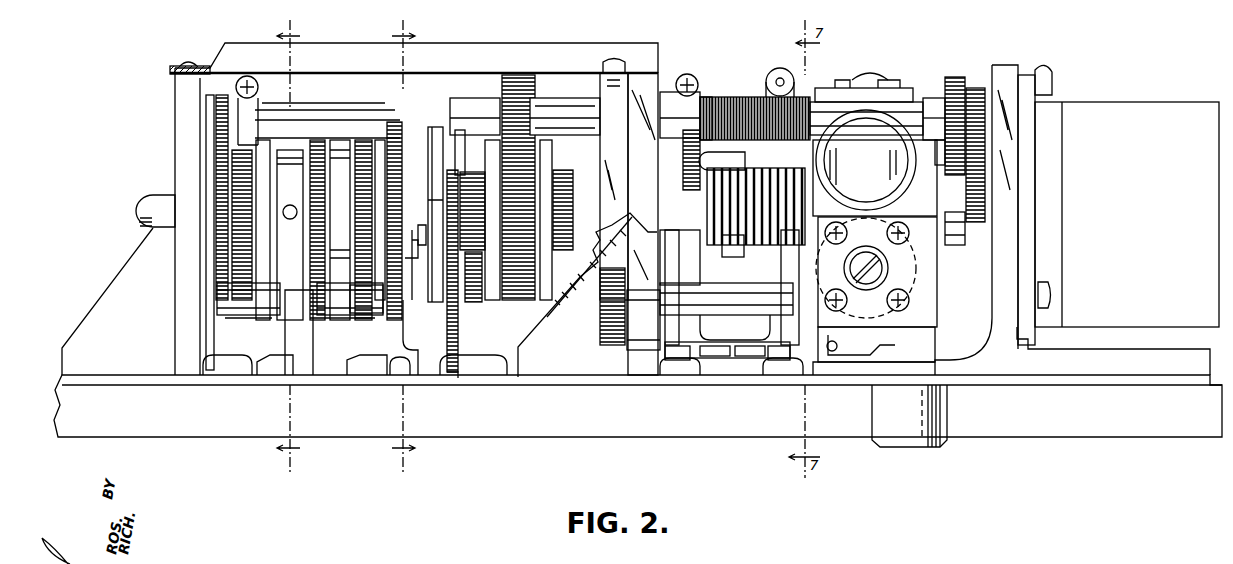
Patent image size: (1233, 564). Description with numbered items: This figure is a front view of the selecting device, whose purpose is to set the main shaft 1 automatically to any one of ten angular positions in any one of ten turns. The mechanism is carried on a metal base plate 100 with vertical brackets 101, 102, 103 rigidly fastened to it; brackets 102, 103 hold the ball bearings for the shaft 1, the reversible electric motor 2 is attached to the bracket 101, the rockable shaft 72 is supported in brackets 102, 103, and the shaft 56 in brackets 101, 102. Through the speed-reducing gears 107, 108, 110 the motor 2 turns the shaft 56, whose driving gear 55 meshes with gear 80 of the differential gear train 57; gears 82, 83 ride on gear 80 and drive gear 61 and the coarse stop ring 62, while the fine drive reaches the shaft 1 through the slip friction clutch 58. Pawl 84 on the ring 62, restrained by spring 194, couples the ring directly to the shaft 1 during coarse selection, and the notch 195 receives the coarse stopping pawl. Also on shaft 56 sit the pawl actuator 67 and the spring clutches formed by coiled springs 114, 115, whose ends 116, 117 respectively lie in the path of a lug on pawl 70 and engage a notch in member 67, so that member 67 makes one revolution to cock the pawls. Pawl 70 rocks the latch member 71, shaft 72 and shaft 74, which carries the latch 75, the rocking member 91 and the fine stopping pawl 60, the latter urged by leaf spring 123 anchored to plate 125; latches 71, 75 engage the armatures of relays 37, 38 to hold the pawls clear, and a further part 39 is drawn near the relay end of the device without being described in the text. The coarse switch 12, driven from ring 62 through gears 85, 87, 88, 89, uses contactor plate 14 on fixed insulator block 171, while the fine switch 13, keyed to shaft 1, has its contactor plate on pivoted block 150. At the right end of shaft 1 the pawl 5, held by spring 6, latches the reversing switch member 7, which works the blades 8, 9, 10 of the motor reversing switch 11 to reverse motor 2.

The main shaft 1 is at (153, 196).
The reversible electric motor 2 is at (1155, 102).
The pawl 5 is at (400, 246).
The spring 6 is at (293, 246).
The reversing switch member 7 is at (706, 300).
The switch blade 8 is at (690, 353).
The switch blade 9 is at (738, 353).
The switch blade 10 is at (766, 353).
The motor reversing switch 11 is at (786, 359).
The coarse selection switch 12 is at (350, 142).
The fine switch 13 is at (270, 139).
The contactor plate 14 is at (356, 312).
The relay 37 is at (926, 298).
The relay 38 is at (918, 176).
The lever 39 is at (828, 352).
The driving gear 55 is at (503, 88).
The shaft 56 is at (582, 108).
The differential gear train 57 is at (523, 302).
The slip friction clutch 58 is at (556, 287).
The stopping pawl 60 is at (618, 284).
The gear 61 is at (472, 182).
The single notched ring 62 is at (441, 128).
The pawl actuator 67 is at (695, 100).
The pawl 70 is at (745, 161).
The latch member 71 is at (791, 342).
The shaft 72 is at (640, 318).
The shaft 74 is at (465, 118).
The latch 75 is at (735, 256).
The gear 80 is at (497, 303).
The gear 82 is at (548, 323).
The gear 83 is at (465, 310).
The pawl 84 is at (424, 232).
The gear 85 is at (460, 178).
The gear 87 is at (456, 374).
The gear 88 is at (409, 334).
The gear 89 is at (392, 124).
The rocking member 91 is at (672, 326).
The base plate 100 is at (963, 425).
The bracket 101 is at (1009, 294).
The bracket 102 is at (655, 192).
The bracket 103 is at (162, 252).
The speed-reducing gear 107 is at (971, 226).
The speed-reducing gear 108 is at (972, 86).
The speed-reducing gear 110 is at (950, 80).
The coiled spring 114 is at (770, 74).
The coiled spring 115 is at (732, 98).
The spring end 116 is at (756, 198).
The spring end 117 is at (712, 100).
The leaf spring 123 is at (626, 148).
The plate 125 is at (663, 92).
The insulator block 150 is at (255, 306).
The insulator block 171 is at (330, 310).
The spring 194 is at (428, 125).
The notch 195 is at (414, 232).